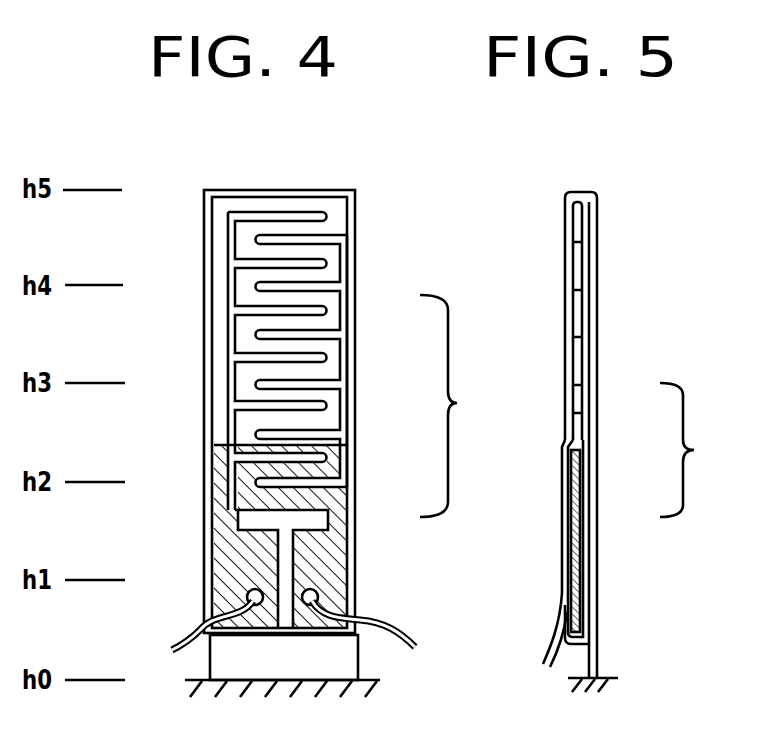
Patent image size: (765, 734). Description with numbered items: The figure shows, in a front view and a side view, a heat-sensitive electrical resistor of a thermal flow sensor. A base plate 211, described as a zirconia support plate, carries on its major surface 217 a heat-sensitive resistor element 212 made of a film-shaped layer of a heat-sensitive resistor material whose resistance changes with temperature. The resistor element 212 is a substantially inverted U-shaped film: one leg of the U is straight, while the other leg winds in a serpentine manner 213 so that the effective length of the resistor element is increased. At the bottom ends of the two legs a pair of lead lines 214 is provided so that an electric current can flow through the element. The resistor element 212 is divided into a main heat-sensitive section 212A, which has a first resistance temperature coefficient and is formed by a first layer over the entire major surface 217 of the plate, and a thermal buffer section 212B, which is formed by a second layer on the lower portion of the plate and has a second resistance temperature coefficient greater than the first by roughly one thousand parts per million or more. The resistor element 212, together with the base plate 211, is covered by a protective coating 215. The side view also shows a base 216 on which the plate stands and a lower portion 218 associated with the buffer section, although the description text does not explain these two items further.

In FIG. 4, the base plate 211 is at (263, 190).
In FIG. 5, the base plate 211 is at (598, 220).
In FIG. 4, the heat-sensitive resistor element 212 is at (320, 420).
In FIG. 5, the heat-sensitive resistor element 212 is at (616, 419).
In FIG. 4, the main heat-sensitive section 212A is at (285, 361).
In FIG. 5, the main heat-sensitive section 212A is at (623, 321).
In FIG. 4, the thermal buffer section 212B is at (326, 536).
In FIG. 5, the thermal buffer section 212B is at (579, 538).
In FIG. 4, the serpentine winding 213 is at (245, 364).
In FIG. 5, the serpentine winding 213 is at (583, 303).
In FIG. 4, the lead lines 214 is at (192, 628).
In FIG. 5, the lead lines 214 is at (555, 633).
In FIG. 4, the protective coating 215 is at (344, 643).
In FIG. 5, the protective coating 215 is at (565, 213).
In FIG. 4, the base 216 is at (270, 692).
In FIG. 5, the base 216 is at (615, 678).
In FIG. 5, the major surface 217 is at (583, 262).
In FIG. 5, the electrode portion 218 is at (572, 567).